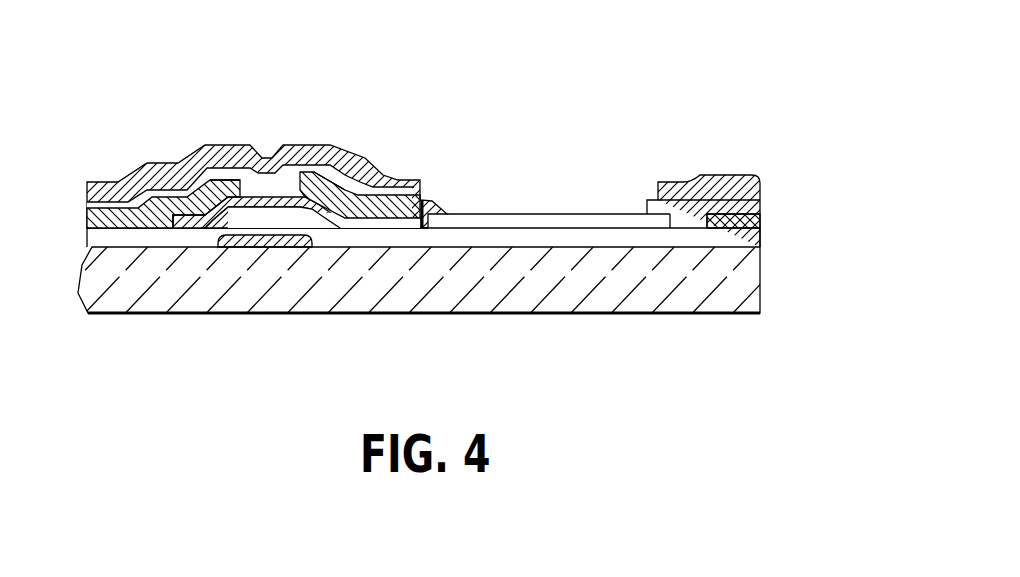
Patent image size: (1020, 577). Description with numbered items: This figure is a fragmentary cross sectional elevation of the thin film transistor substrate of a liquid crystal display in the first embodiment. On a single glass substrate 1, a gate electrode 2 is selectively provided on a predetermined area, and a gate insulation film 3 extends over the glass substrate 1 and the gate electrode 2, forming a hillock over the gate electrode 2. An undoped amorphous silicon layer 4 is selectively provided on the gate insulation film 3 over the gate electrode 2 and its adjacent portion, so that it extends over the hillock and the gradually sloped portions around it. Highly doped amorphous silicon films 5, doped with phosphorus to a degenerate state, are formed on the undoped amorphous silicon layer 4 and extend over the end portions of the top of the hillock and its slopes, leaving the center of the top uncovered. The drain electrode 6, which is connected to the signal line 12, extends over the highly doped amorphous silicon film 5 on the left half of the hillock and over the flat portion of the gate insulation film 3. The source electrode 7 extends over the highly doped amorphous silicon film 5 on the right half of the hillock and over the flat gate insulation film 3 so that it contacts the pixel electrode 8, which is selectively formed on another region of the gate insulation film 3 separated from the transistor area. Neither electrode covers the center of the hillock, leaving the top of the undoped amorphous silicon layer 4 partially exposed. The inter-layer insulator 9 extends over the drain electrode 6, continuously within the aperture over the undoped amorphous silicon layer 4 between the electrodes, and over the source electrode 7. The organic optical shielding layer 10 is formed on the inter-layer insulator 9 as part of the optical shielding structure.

The glass substrate 1 is at (482, 300).
The gate electrode 2 is at (237, 248).
The gate insulation film 3 is at (623, 241).
The undoped amorphous silicon layer 4 is at (182, 222).
The highly doped amorphous silicon film 5 is at (238, 186).
The drain electrode 6 is at (147, 213).
The source electrode 7 is at (349, 211).
The pixel electrode 8 is at (514, 218).
The inter-layer insulator 9 is at (270, 180).
The organic optical shielding layer 10 is at (308, 170).
The signal line 12 is at (745, 213).